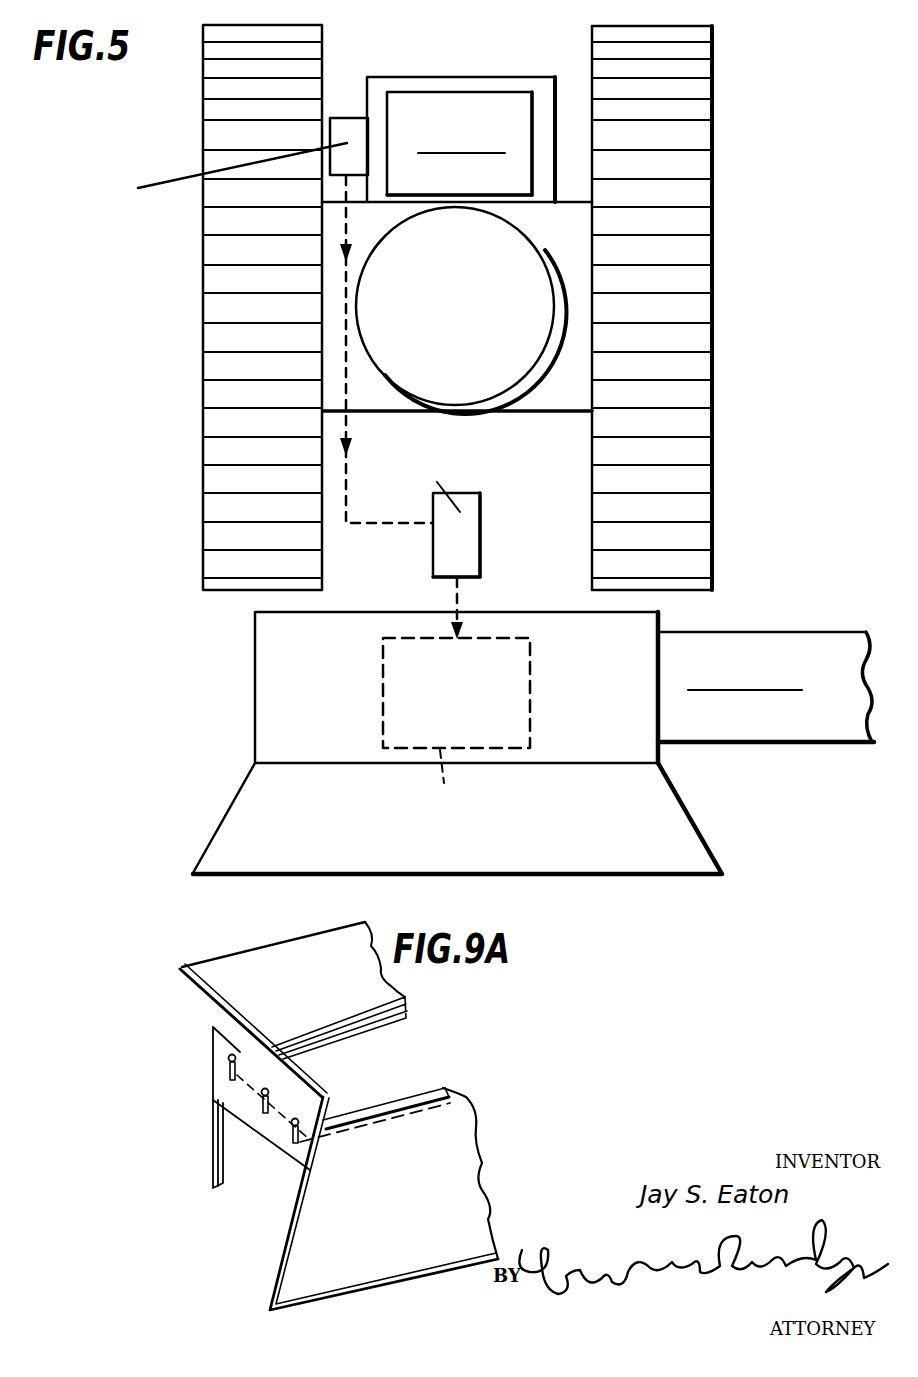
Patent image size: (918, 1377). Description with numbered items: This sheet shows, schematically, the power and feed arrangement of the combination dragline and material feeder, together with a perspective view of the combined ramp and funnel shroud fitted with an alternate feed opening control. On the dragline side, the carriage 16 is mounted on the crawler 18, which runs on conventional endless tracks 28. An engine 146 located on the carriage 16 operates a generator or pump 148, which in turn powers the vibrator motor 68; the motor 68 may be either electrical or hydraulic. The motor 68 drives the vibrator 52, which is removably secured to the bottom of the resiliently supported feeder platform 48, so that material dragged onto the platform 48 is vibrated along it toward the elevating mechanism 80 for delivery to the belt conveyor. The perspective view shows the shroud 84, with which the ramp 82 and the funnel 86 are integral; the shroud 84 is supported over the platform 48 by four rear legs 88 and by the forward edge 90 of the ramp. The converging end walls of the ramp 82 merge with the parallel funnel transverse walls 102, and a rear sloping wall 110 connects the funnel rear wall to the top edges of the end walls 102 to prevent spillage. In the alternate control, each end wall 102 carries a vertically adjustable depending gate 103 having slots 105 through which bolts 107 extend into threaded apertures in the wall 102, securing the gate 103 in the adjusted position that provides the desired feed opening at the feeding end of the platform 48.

In FIG. 5, the carriage 16 is at (463, 303).
In FIG. 5, the crawler 18 is at (575, 420).
In FIG. 5, the endless tracks 28 is at (222, 335).
In FIG. 5, the feeder platform 48 is at (280, 663).
In FIG. 5, the vibrator 52 is at (545, 705).
In FIG. 5, the motor 68 is at (467, 511).
In FIG. 5, the elevating mechanism 80 is at (797, 753).
In FIG. 5, the ramp 82 is at (655, 848).
In FIG. 9A, the ramp 82 is at (452, 1172).
In FIG. 9A, the shroud 84 is at (172, 985).
In FIG. 9A, the funnel 86 is at (303, 925).
In FIG. 9A, the rear legs 88 is at (214, 1148).
In FIG. 5, the forward edge 90 is at (365, 878).
In FIG. 9A, the funnel transverse walls 102 is at (300, 1076).
In FIG. 9A, the gate 103 is at (214, 1081).
In FIG. 9A, the slots 105 is at (232, 1081).
In FIG. 9A, the bolts 107 is at (266, 1088).
In FIG. 9A, the rear sloping wall 110 is at (286, 940).
In FIG. 5, the engine 146 is at (465, 102).
In FIG. 5, the generator or pump 148 is at (343, 128).